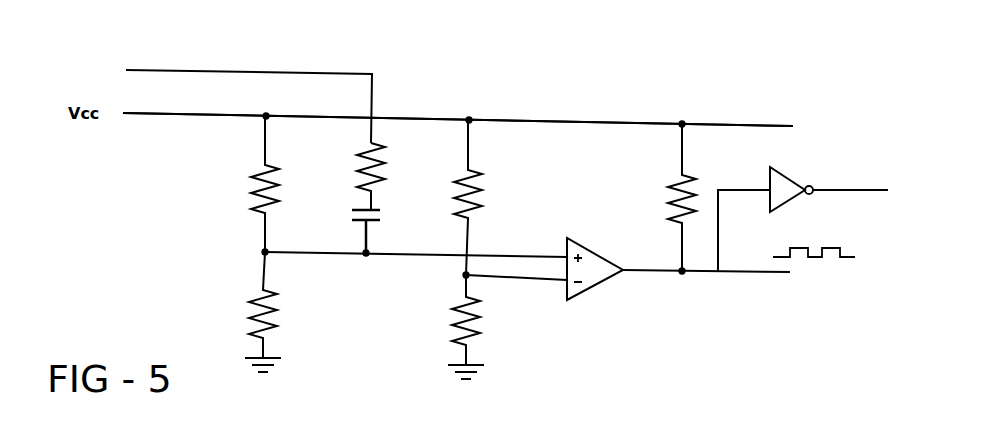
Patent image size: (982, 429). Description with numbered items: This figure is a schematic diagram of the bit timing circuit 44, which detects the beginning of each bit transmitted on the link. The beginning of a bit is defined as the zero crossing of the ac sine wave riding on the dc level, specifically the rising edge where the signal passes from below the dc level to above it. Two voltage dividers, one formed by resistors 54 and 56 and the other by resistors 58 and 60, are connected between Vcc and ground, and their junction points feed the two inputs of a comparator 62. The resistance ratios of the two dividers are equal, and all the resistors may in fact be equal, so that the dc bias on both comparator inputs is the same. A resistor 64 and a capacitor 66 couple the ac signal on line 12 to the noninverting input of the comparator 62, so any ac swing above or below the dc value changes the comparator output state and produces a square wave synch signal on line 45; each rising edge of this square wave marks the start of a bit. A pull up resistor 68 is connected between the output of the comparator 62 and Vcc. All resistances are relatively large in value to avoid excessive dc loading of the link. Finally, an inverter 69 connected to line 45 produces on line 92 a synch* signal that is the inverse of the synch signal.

The line 12 is at (150, 70).
The bit timing circuit 44 is at (190, 212).
The line 45 is at (765, 273).
The resistor 54 is at (250, 180).
The resistor 56 is at (250, 292).
The resistor 58 is at (478, 190).
The resistor 60 is at (470, 312).
The comparator 62 is at (600, 292).
The resistor 64 is at (355, 170).
The capacitor 66 is at (352, 230).
The pull up resistor 68 is at (668, 198).
The inverter 69 is at (790, 172).
The line 92 is at (843, 190).